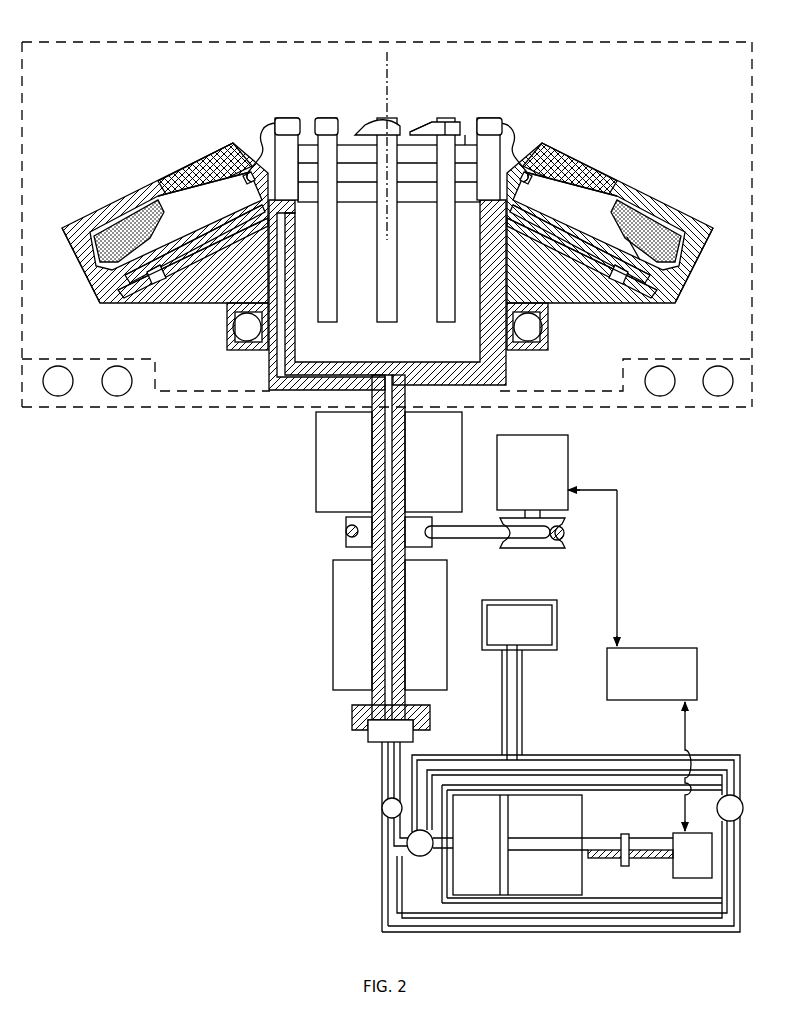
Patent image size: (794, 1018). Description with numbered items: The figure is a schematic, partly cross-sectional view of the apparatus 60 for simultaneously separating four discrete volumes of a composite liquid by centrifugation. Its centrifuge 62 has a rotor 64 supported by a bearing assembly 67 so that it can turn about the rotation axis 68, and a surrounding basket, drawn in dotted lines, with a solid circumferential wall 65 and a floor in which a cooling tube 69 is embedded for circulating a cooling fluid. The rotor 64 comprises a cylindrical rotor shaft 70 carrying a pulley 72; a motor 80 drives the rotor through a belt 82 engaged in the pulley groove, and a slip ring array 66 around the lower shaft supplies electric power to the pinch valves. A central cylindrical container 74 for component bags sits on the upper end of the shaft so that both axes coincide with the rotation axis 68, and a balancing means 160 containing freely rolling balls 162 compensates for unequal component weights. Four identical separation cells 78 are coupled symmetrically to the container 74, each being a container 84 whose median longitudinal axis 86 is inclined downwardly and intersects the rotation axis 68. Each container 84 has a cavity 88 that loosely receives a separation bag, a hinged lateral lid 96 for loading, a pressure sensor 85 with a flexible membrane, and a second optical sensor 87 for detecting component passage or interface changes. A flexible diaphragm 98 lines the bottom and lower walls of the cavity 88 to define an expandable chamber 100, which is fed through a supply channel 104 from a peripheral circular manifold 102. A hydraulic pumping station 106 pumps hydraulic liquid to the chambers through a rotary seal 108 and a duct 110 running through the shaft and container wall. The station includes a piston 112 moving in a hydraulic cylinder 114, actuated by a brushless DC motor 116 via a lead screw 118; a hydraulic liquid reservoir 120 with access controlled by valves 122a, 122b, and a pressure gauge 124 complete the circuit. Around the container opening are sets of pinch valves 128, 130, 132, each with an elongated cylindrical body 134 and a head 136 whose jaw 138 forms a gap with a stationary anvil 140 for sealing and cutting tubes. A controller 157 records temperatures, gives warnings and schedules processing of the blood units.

The apparatus 60 is at (250, 622).
The centrifuge 62 is at (252, 112).
The rotor 64 is at (258, 349).
The circumferential wall 65 is at (752, 58).
The slip ring array 66 is at (333, 623).
The bearing assembly 67 is at (315, 446).
The rotation axis 68 is at (386, 80).
The cooling tube 69 is at (50, 394).
The rotor shaft 70 is at (372, 697).
The pulley 72 is at (346, 543).
The central cylindrical container 74 is at (372, 290).
The separation cell 78 is at (132, 327).
The motor 80 is at (570, 457).
The belt 82 is at (450, 540).
The container 84 is at (118, 192).
The pressure sensor 85 is at (152, 283).
The median longitudinal axis 86 is at (72, 268).
The second optical sensor 87 is at (262, 176).
The cavity 88 is at (212, 215).
The hinged lateral lid 96 is at (170, 168).
The flexible diaphragm 98 is at (172, 255).
The expandable chamber 100 is at (690, 238).
The peripheral circular manifold 102 is at (647, 282).
The supply channel 104 is at (130, 273).
The hydraulic pumping station 106 is at (438, 870).
The rotary seal 108 is at (337, 757).
The duct 110 is at (390, 765).
The piston 112 is at (500, 838).
The hydraulic cylinder 114 is at (590, 883).
The brushless DC motor 116 is at (700, 883).
The lead screw 118 is at (632, 853).
The hydraulic liquid reservoir 120 is at (557, 615).
The valve 122a is at (413, 855).
The valve 122b is at (722, 795).
The pressure gauge 124 is at (382, 811).
The pinch valve 128 is at (322, 120).
The pinch valve 130 is at (280, 121).
The pinch valve 132 is at (448, 122).
The elongated cylindrical body 134 is at (332, 323).
The head 136 is at (440, 125).
The jaw 138 is at (412, 129).
The anvil 140 is at (468, 141).
The controller 157 is at (660, 647).
The balancing means 160 is at (548, 333).
The balls 162 is at (524, 334).